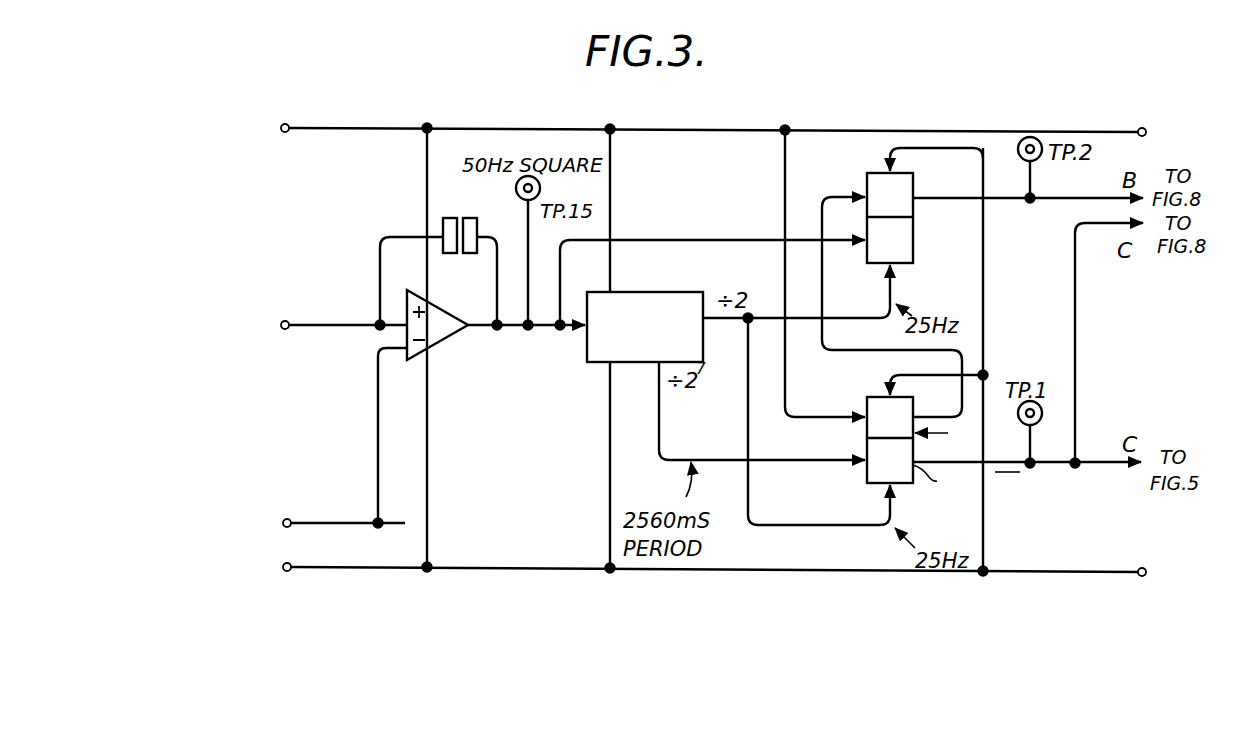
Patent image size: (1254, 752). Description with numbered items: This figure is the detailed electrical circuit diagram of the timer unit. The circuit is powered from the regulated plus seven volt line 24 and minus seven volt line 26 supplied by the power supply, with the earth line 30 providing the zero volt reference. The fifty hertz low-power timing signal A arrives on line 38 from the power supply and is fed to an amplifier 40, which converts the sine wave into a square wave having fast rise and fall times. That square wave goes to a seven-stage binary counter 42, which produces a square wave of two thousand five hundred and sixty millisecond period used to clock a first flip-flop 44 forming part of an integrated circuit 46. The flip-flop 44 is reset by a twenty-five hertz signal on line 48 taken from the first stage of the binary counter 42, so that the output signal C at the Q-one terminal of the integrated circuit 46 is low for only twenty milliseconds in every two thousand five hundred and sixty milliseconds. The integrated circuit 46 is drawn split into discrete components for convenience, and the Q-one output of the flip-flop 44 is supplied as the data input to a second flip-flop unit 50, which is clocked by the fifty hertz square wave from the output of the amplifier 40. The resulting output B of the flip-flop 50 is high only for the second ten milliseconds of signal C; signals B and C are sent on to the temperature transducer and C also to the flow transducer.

The +7 volt regulated supply line 24 is at (355, 137).
The −7 volt regulated supply line 26 is at (318, 565).
The earth line 30 is at (344, 524).
The line 38 is at (340, 322).
The amplifier 40 is at (437, 336).
The 7-stage binary counter 42 is at (664, 349).
The first flip-flop 44 is at (905, 435).
The integrated circuit 46 is at (947, 434).
The line 48 is at (830, 526).
The second flip-flop unit 50 is at (905, 211).